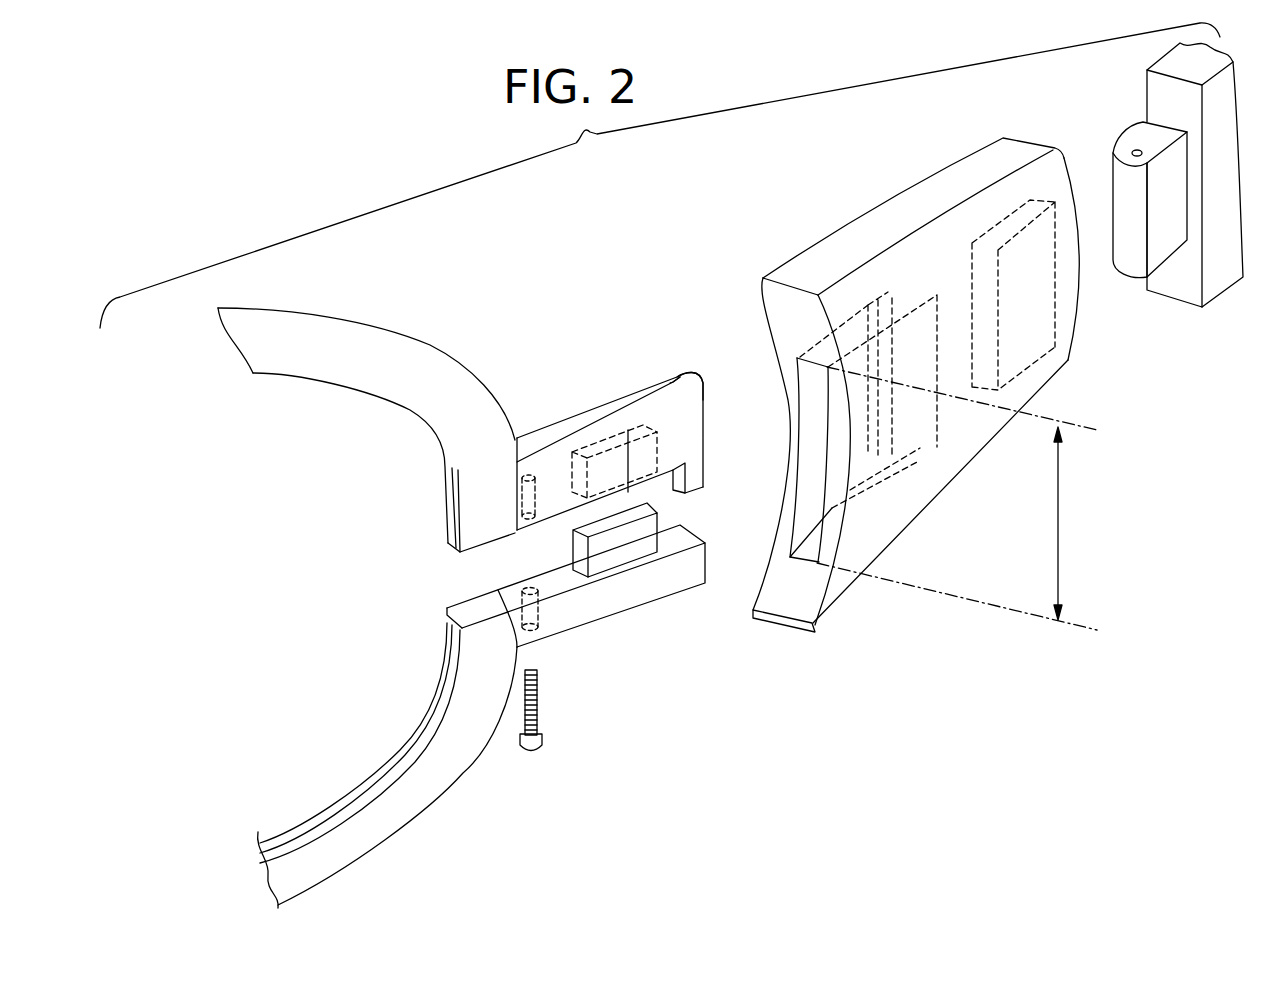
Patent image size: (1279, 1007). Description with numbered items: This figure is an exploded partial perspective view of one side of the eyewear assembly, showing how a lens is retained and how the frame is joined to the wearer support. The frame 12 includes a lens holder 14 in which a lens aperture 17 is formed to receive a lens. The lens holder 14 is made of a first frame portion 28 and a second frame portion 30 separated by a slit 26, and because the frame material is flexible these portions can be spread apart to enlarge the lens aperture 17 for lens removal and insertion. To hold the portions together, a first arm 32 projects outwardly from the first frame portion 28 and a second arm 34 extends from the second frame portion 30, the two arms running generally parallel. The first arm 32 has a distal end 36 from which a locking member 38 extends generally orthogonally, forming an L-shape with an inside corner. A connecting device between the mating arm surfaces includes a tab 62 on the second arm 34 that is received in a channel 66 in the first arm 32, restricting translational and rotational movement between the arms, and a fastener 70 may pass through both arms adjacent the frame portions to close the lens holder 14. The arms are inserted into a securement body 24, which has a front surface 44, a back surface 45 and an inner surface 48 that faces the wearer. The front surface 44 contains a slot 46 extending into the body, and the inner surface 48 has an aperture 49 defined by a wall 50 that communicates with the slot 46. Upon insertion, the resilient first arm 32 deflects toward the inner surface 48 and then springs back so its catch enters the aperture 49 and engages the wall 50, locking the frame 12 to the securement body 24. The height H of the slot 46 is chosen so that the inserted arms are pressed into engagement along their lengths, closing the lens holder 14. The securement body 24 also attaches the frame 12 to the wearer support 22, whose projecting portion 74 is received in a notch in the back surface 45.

The frame 12 is at (290, 318).
The lens holder 14 is at (417, 820).
The lens aperture 17 is at (370, 720).
The wearer support 22 is at (1168, 57).
The securement body 24 is at (842, 253).
The slit 26 is at (447, 613).
The first frame portion 28 is at (418, 338).
The second frame portion 30 is at (463, 770).
The first arm 32 is at (602, 420).
The second arm 34 is at (650, 603).
The distal end 36 is at (673, 382).
The locking member 38 is at (690, 372).
The front surface 44 is at (797, 598).
The back surface 45 is at (1032, 140).
The slot 46 is at (813, 452).
The inner surface 48 is at (775, 330).
The aperture 49 is at (887, 302).
The wall 50 is at (922, 425).
The tab 62 is at (580, 548).
The channel 66 is at (600, 467).
The fastener 70 is at (542, 743).
The projecting portion 74 is at (1143, 137).
The height of the slot H is at (957, 498).